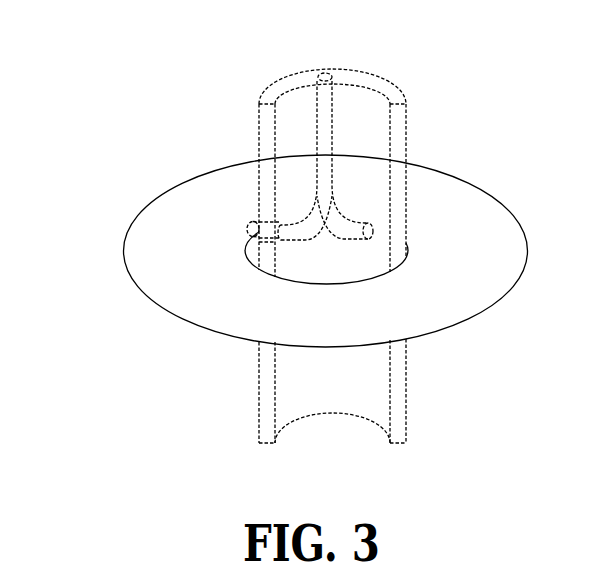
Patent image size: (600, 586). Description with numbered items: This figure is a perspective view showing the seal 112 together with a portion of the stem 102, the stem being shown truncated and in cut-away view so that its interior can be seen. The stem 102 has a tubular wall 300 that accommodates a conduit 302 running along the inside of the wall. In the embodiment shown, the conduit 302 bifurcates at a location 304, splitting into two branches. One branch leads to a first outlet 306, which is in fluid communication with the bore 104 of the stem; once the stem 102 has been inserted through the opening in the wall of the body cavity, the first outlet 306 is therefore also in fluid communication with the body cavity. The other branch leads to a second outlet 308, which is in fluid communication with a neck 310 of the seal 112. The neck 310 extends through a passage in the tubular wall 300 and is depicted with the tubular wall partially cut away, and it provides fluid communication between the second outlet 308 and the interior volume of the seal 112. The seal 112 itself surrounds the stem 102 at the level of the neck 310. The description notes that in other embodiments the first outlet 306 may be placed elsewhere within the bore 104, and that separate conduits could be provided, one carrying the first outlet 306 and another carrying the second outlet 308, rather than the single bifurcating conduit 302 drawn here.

The stem 102 is at (407, 129).
The bore 104 is at (324, 396).
The seal 112 is at (148, 266).
The tubular wall 300 is at (282, 88).
The conduit 302 is at (333, 102).
The bifurcation location 304 is at (322, 192).
The first outlet 306 is at (375, 232).
The second outlet 308 is at (291, 215).
The neck 310 is at (258, 223).